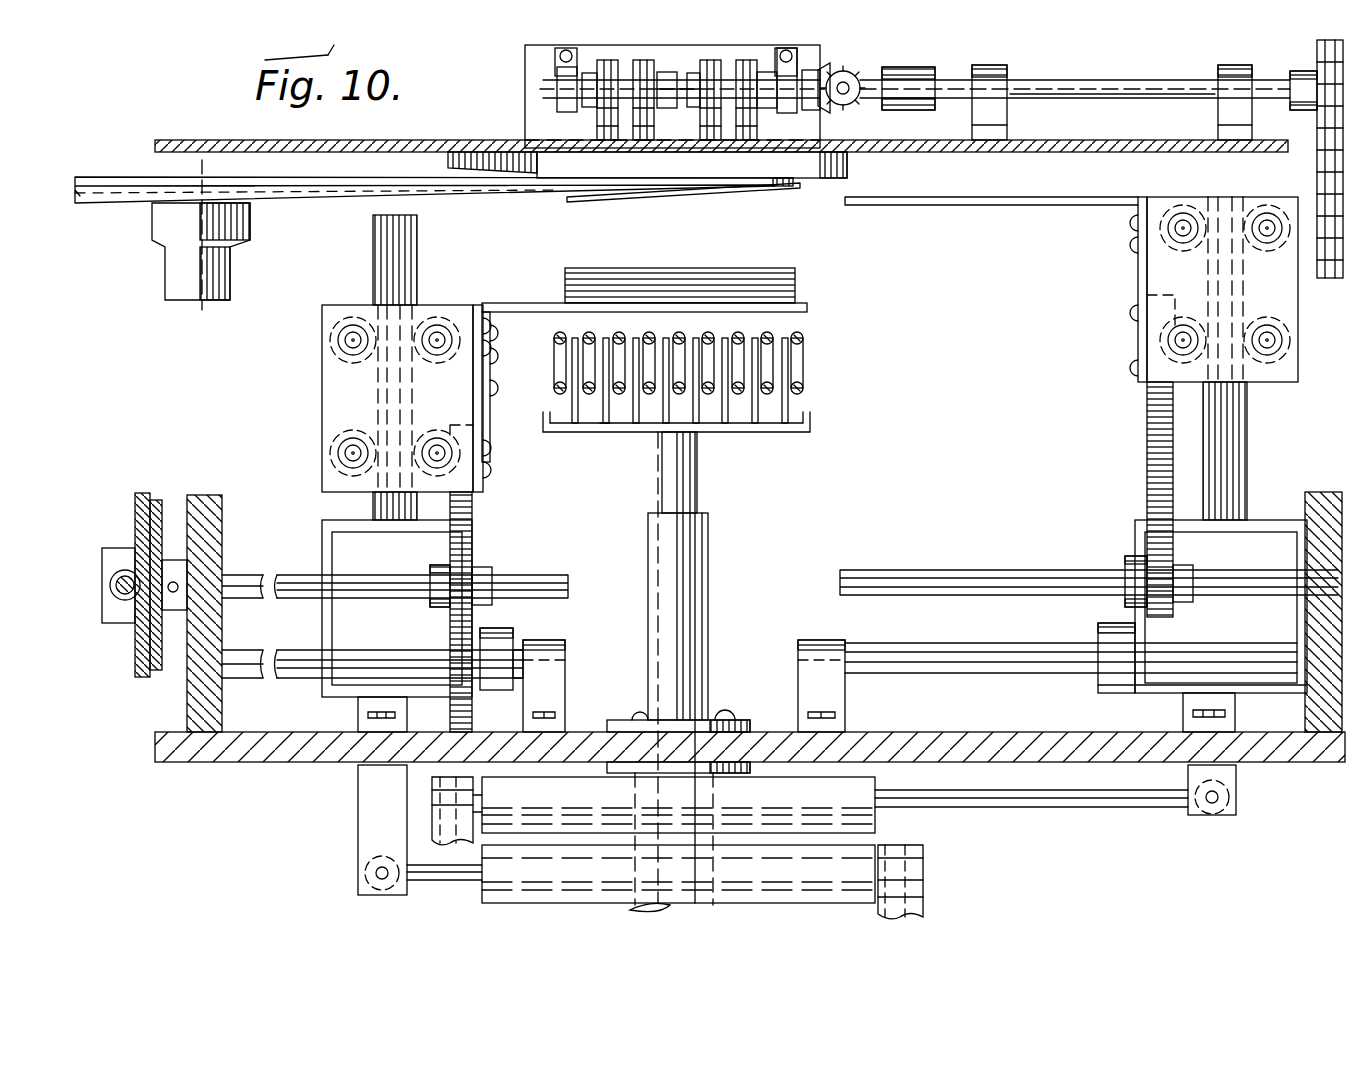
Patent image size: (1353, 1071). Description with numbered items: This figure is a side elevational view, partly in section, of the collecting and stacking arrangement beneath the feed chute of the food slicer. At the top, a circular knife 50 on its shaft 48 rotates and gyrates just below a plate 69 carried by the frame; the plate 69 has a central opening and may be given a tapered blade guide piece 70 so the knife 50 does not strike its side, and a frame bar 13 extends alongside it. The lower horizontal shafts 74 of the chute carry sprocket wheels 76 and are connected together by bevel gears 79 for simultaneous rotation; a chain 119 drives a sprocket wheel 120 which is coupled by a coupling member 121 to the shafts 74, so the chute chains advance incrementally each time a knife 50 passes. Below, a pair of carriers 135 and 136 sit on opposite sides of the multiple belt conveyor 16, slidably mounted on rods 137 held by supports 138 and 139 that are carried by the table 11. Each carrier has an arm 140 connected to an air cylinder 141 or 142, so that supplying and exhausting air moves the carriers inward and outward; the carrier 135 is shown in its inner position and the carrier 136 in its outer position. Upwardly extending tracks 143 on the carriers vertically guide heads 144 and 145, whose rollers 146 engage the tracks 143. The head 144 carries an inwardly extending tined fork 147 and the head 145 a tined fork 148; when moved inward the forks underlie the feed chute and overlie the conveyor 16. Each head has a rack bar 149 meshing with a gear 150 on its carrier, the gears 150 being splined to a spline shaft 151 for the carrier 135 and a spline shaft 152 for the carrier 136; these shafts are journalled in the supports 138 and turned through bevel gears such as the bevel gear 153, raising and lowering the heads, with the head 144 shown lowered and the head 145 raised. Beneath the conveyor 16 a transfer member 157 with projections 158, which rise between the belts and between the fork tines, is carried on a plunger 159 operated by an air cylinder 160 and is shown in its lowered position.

The table 11 is at (1010, 740).
The frame bar 13 is at (320, 150).
The multiple belt conveyor 16 is at (553, 338).
The shaft 48 is at (225, 270).
The circular knife 50 is at (325, 190).
The plate 69 is at (850, 170).
The knurled support 70 is at (445, 162).
The horizontal shaft 74 is at (676, 96).
The sprocket wheel 76 is at (600, 110).
The bevel gear 79 is at (845, 70).
The chain 119 is at (1330, 280).
The sprocket wheel 120 is at (1308, 58).
The coupling member 121 is at (915, 82).
The carrier 135 is at (505, 630).
The carrier 136 is at (1105, 625).
The rod 137 is at (296, 658).
The support 138 is at (218, 720).
The support 139 is at (552, 694).
The arm 140 is at (372, 826).
The air cylinder 141 is at (505, 900).
The air cylinder 142 is at (878, 822).
The track 143 is at (378, 268).
The head 144 is at (326, 386).
The head 145 is at (1168, 288).
The roller 146 is at (445, 318).
The tined fork 147 is at (805, 305).
The tined fork 148 is at (1022, 207).
The rack bar 149 is at (474, 515).
The gear 150 is at (480, 562).
The spline shaft 151 is at (545, 575).
The spline shaft 152 is at (960, 576).
The bevel gear 153 is at (133, 510).
The transfer member 157 is at (740, 432).
The projection 158 is at (625, 425).
The plunger 159 is at (700, 500).
The air cylinder 160 is at (710, 908).